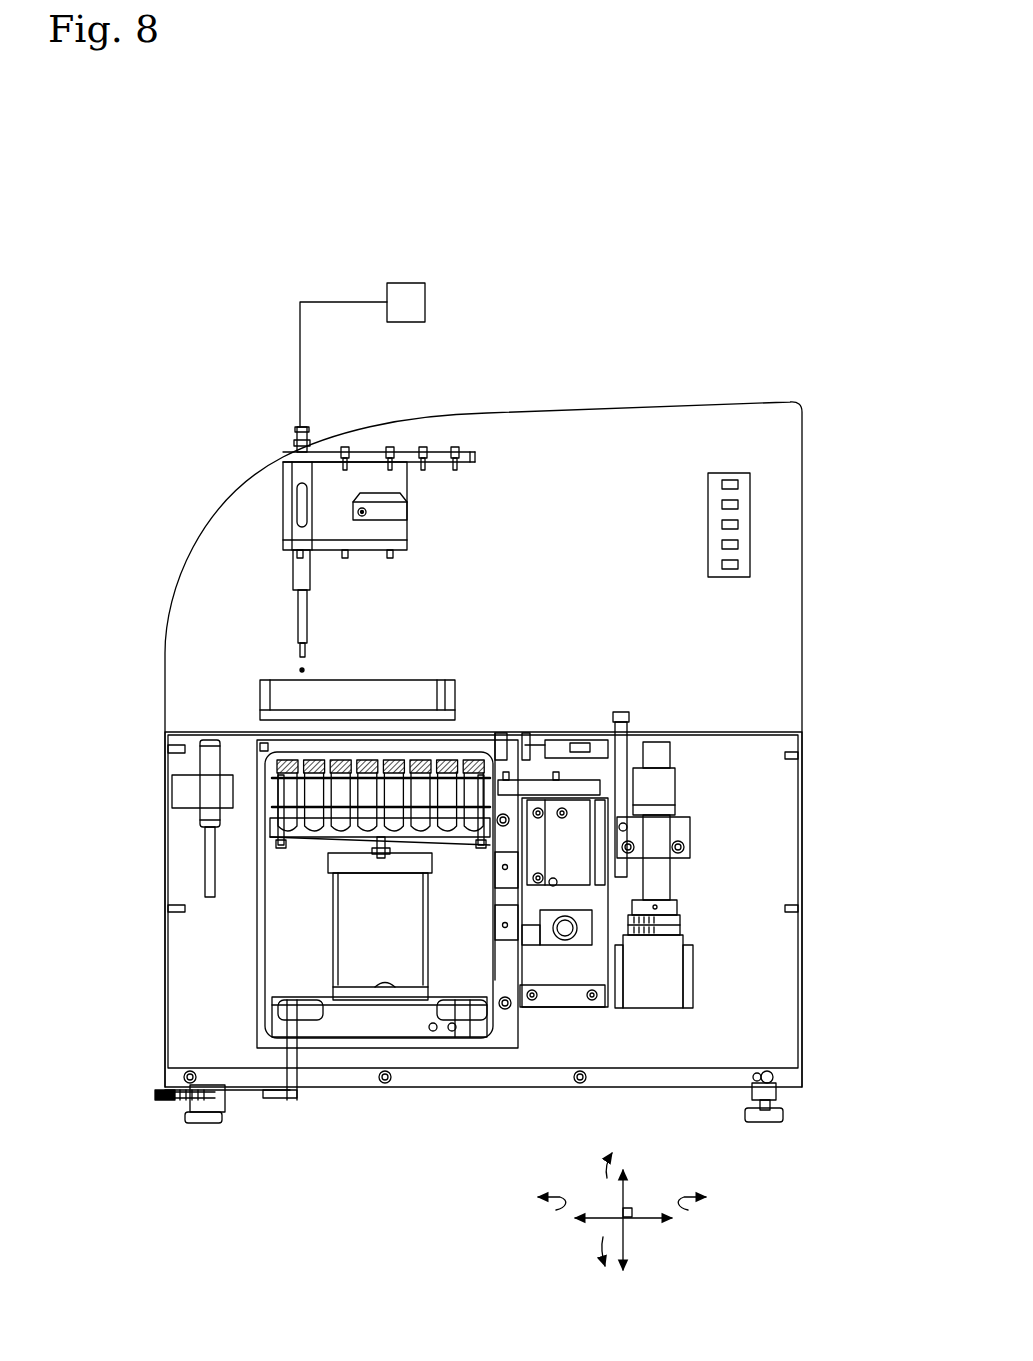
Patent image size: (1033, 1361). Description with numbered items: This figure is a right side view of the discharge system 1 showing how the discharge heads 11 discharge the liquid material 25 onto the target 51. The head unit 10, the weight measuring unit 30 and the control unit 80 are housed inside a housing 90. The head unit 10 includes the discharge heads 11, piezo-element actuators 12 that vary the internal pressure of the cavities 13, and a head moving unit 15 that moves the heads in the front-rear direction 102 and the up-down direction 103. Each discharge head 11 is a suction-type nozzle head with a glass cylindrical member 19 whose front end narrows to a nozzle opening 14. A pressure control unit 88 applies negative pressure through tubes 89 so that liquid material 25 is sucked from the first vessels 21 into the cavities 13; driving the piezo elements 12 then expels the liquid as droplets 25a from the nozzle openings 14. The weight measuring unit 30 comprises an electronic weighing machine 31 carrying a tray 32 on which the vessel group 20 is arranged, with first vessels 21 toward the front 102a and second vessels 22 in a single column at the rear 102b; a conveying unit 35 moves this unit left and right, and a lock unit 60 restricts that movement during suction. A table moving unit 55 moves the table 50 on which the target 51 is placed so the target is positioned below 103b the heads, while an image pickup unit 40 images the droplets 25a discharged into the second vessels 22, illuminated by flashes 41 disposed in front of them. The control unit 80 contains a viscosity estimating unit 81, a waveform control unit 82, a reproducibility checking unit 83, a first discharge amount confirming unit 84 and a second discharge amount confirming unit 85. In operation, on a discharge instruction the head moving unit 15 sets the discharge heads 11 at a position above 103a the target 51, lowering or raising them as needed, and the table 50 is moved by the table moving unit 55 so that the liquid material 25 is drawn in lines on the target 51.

The discharge system 1 is at (215, 402).
The head unit 10 is at (330, 446).
The discharge head 11 is at (302, 427).
The actuator 12 is at (302, 507).
The cavity 13 is at (295, 523).
The nozzle opening 14 is at (297, 678).
The head moving unit 15 is at (400, 453).
The cylindrical member 19 is at (307, 627).
The vessel group 20 is at (331, 742).
The first vessel 21 is at (447, 758).
The second vessel 22 is at (480, 757).
The liquid material 25 is at (395, 849).
The droplet 25a is at (302, 670).
The weight measuring unit 30 is at (331, 886).
The electronic weighing machine 31 is at (363, 947).
The tray 32 is at (268, 823).
The conveying unit 35 is at (392, 1027).
The image pickup unit 40 is at (655, 745).
The flash 41 is at (217, 757).
The table 50 is at (283, 697).
The target 51 is at (283, 690).
The table moving unit 55 is at (600, 722).
The lock unit 60 is at (245, 978).
The control unit 80 is at (779, 483).
The viscosity estimating unit 81 is at (738, 484).
The waveform control unit 82 is at (738, 504).
The reproducibility checking unit 83 is at (738, 524).
The first discharge amount confirming unit 84 is at (738, 544).
The second discharge amount confirming unit 85 is at (738, 564).
The pressure control unit 88 is at (407, 293).
The tube 89 is at (330, 302).
The housing 90 is at (648, 405).
The second direction 102 is at (625, 1256).
The front 102a is at (560, 1207).
The rear 102b is at (685, 1200).
The third direction 103 is at (618, 1218).
The upward 103a is at (615, 1167).
The downward 103b is at (603, 1237).